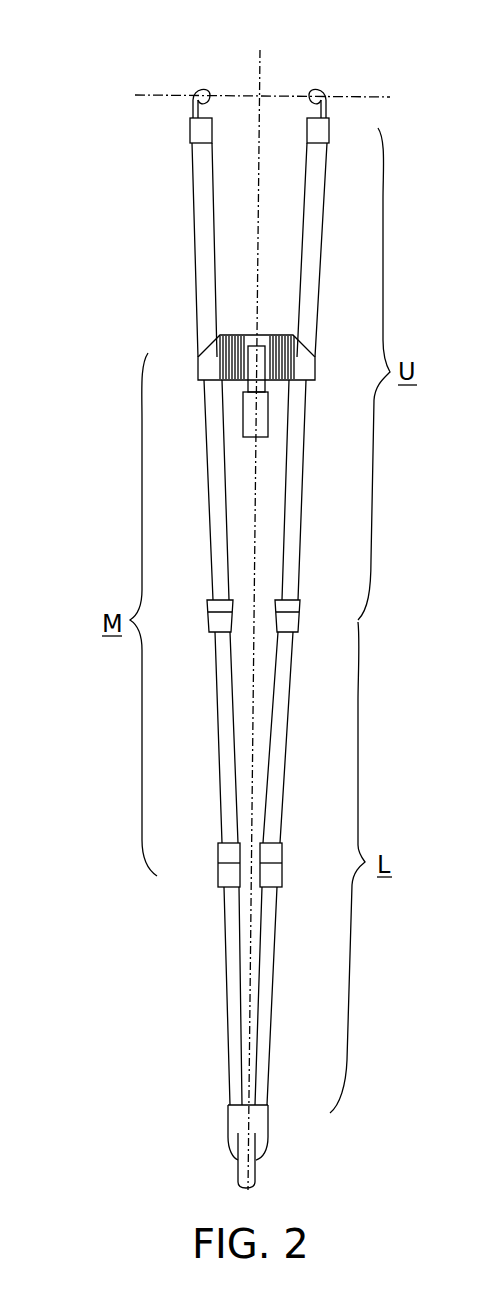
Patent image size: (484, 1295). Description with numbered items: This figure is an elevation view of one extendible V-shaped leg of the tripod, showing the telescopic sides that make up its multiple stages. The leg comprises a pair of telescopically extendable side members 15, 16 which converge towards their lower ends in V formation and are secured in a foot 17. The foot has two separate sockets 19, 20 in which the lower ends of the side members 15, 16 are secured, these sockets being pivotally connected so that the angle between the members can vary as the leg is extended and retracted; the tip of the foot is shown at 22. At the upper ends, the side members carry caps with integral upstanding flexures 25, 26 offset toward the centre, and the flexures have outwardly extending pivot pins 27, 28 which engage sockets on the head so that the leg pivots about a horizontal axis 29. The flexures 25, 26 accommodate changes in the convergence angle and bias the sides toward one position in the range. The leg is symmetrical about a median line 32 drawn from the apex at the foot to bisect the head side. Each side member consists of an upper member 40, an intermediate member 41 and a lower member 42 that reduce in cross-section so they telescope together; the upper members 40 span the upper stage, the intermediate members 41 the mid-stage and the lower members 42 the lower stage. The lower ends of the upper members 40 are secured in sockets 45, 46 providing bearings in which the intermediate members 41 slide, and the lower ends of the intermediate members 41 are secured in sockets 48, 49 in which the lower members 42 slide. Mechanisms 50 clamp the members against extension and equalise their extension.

The side member 15 is at (128, 192).
The side member 16 is at (425, 262).
The foot 17 is at (240, 1172).
The socket 19 is at (228, 1120).
The socket 20 is at (268, 1120).
The second tip end 22 is at (255, 1172).
The flexure 25 is at (193, 110).
The flexure 26 is at (326, 110).
The pivot pin 27 is at (200, 88).
The pivot pin 28 is at (322, 90).
The horizontal axis 29 is at (388, 97).
The median line 32 is at (255, 518).
The upper member 40 is at (198, 250).
The intermediate member 41 is at (215, 748).
The lower member 42 is at (226, 1012).
The socket 45 is at (207, 610).
The socket 46 is at (300, 610).
The socket 48 is at (282, 860).
The socket 49 is at (218, 860).
The mechanisms 50 is at (243, 330).